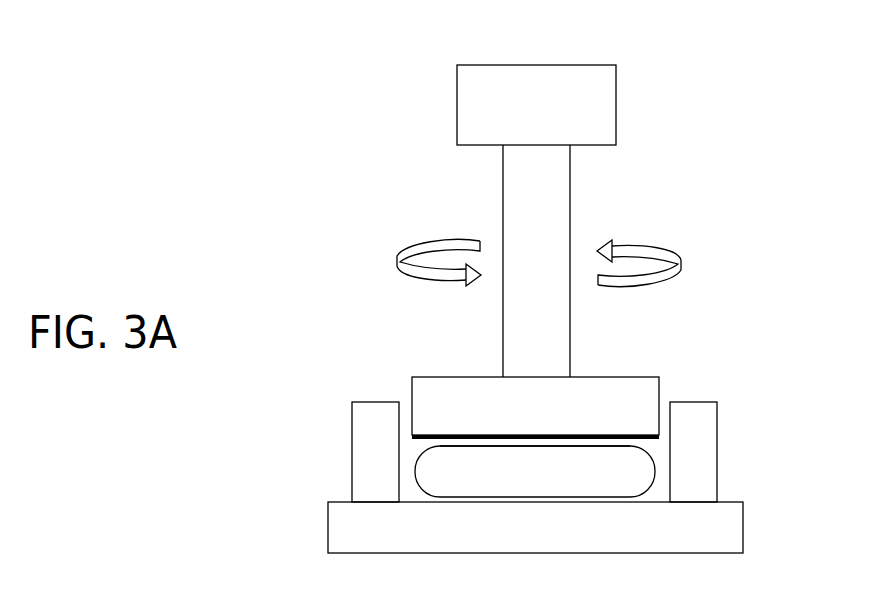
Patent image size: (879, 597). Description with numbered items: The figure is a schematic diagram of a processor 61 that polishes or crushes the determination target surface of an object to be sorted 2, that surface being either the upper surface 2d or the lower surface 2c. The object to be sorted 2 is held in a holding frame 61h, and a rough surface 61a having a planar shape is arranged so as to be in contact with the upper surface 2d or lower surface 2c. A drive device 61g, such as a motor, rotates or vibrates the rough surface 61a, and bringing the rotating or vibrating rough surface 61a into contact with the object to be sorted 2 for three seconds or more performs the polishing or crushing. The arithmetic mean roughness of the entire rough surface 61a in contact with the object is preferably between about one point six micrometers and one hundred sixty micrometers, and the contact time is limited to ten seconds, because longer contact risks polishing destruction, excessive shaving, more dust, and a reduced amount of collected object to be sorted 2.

The processor 61 is at (598, 220).
The drive device 61g is at (593, 103).
The rough surface 61a is at (672, 436).
The holding frame 61h is at (695, 478).
The object to be sorted 2 is at (448, 472).
The lower surface 2c is at (565, 378).
The upper surface 2d is at (582, 445).